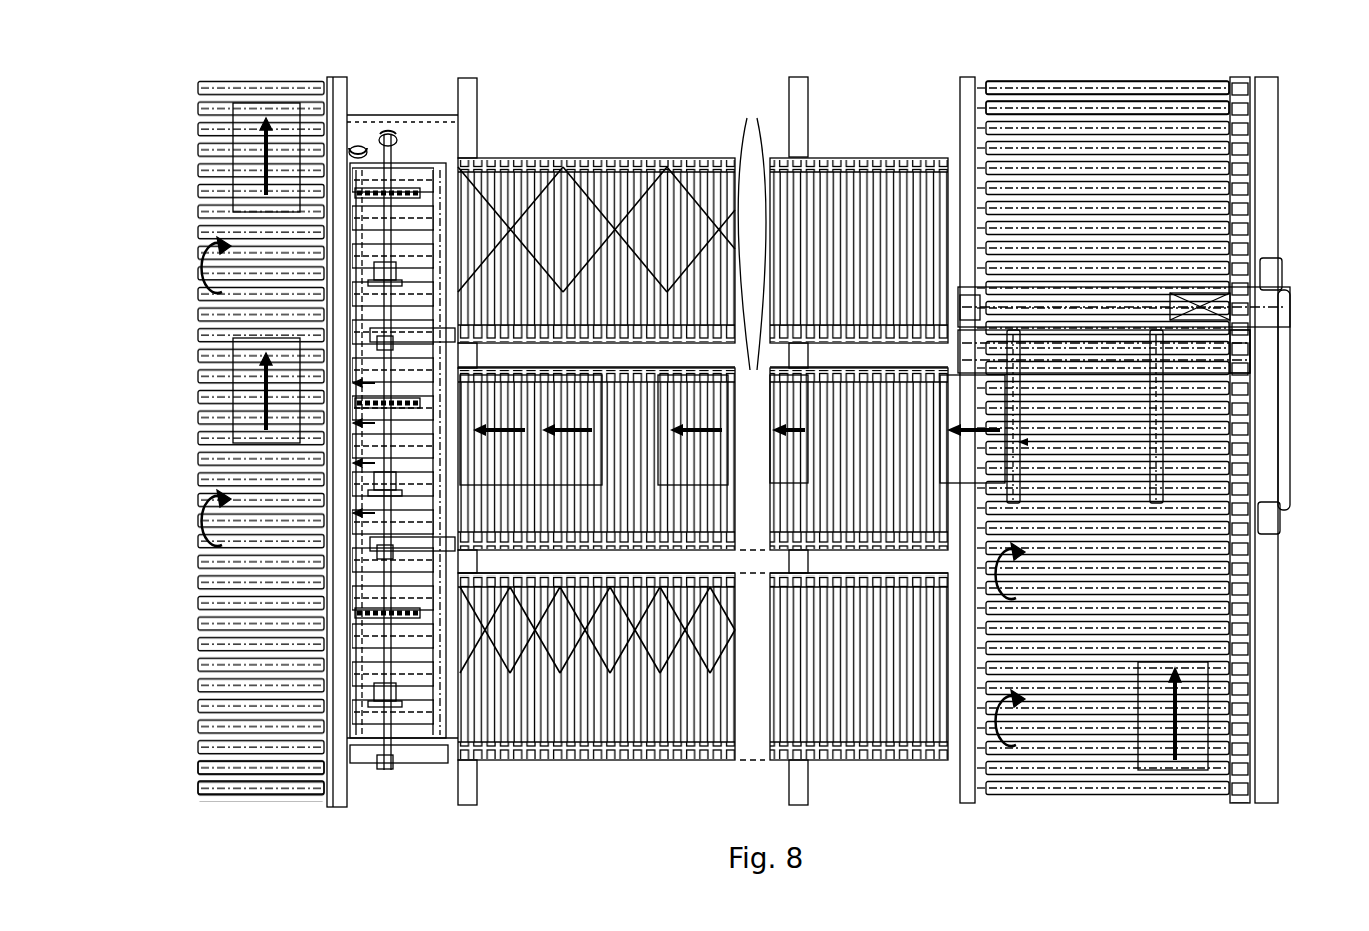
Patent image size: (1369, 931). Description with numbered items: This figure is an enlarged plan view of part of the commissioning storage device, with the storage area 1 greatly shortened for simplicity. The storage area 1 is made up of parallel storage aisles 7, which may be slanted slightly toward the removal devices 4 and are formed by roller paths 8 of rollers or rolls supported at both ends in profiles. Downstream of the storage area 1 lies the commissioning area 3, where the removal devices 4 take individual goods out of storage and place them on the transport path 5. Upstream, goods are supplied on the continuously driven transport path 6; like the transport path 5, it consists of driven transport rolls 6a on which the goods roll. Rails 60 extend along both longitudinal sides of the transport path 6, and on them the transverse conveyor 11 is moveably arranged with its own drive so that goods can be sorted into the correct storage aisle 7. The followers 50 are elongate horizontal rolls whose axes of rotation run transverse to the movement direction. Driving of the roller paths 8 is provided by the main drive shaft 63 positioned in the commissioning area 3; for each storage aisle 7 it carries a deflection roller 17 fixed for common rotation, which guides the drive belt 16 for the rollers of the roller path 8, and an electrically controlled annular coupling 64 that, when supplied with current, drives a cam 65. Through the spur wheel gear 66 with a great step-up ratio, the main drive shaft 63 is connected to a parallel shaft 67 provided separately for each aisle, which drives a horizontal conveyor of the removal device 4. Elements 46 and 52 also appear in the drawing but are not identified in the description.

The storage area 1 is at (660, 150).
The commissioning area 3 is at (421, 105).
The removal device 4 is at (447, 750).
The transport path 5 is at (274, 812).
The transport path 6 is at (1046, 818).
The transport roll 6a is at (218, 762).
The storage aisle 7 is at (752, 425).
The roller path 8 is at (537, 660).
The transverse conveyor 11 is at (1295, 512).
The drive belt 16 is at (450, 770).
The deflection roller 17 is at (370, 750).
The pusher 46 is at (1107, 372).
The follower 50 is at (1023, 492).
The workpiece carrier plate 52 is at (583, 660).
The rail 60 is at (963, 800).
The main drive shaft 63 is at (397, 172).
The coupling 64 is at (377, 275).
The cam 65 is at (403, 290).
The spur wheel gear 66 is at (376, 168).
The parallel shaft 67 is at (352, 147).